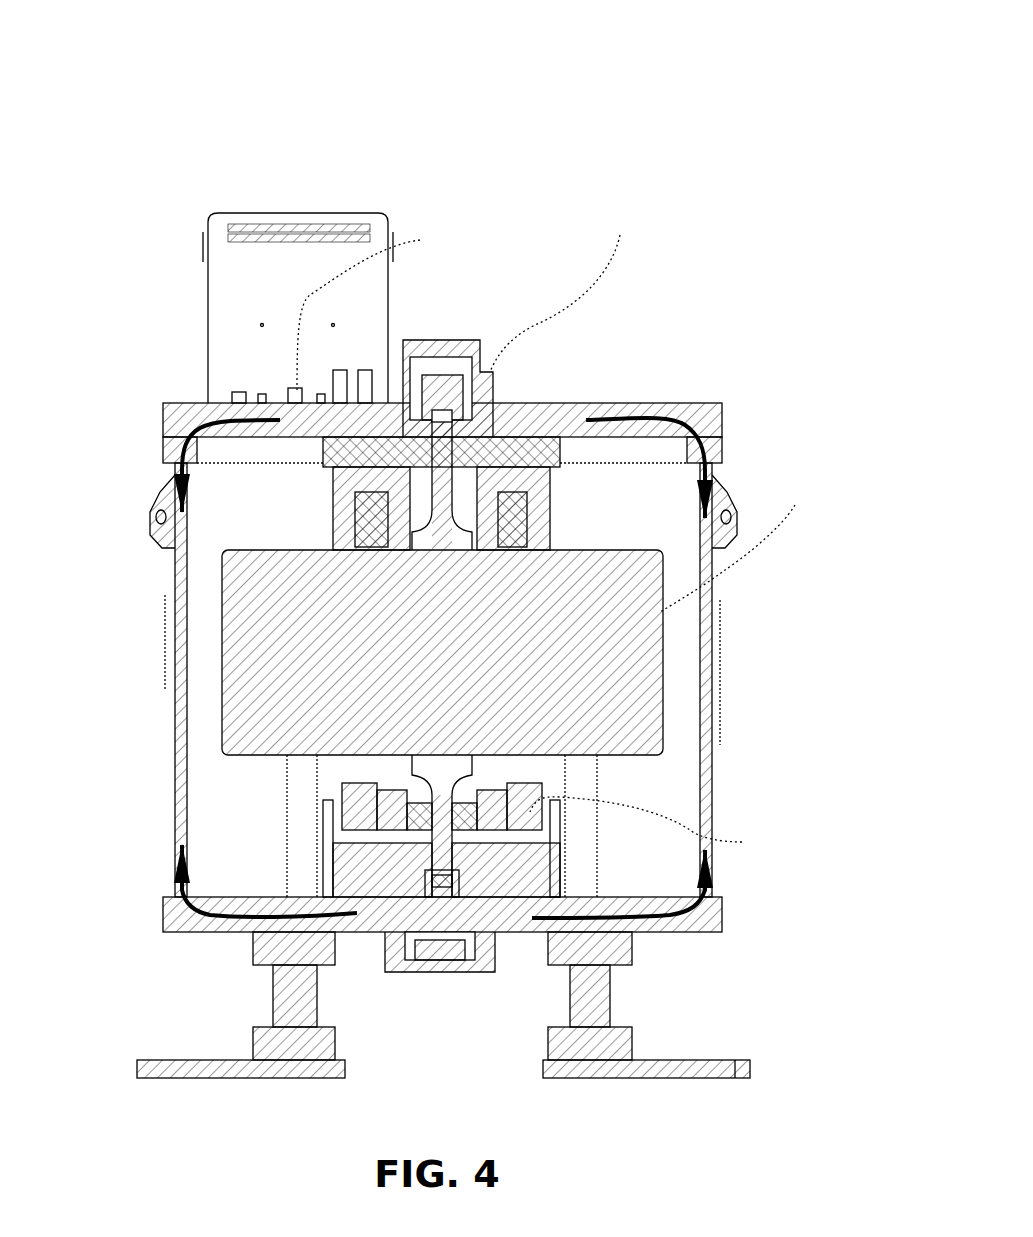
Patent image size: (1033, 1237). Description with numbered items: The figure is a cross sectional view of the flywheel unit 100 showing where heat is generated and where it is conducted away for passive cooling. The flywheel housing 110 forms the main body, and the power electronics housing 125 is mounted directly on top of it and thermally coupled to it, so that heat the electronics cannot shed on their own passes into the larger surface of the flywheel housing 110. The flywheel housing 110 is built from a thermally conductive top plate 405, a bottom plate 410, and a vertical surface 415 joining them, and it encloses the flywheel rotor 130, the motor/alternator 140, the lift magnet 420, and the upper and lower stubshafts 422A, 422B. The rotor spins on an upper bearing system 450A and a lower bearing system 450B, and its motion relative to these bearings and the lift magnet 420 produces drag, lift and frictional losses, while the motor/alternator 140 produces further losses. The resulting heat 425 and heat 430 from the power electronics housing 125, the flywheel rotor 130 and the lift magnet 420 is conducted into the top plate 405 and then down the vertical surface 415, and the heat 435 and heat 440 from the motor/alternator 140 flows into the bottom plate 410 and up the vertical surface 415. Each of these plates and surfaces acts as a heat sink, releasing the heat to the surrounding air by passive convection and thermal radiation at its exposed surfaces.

The flywheel unit 100 is at (455, 563).
The flywheel housing 110 is at (447, 585).
The power electronics housing 125 is at (213, 327).
The flywheel rotor 130 is at (638, 678).
The motor/alternator 140 is at (432, 907).
The top plate 405 is at (178, 402).
The bottom plate 410 is at (392, 978).
The vertical surface 415 is at (451, 689).
The lift magnet 420 is at (517, 518).
The stubshaft 422A is at (440, 515).
The stubshaft 422B is at (440, 787).
The heat 425 is at (702, 408).
The heat 430 is at (184, 455).
The heat 435 is at (180, 912).
The heat 440 is at (705, 906).
The bearing system 450A is at (458, 417).
The bearing system 450B is at (455, 880).